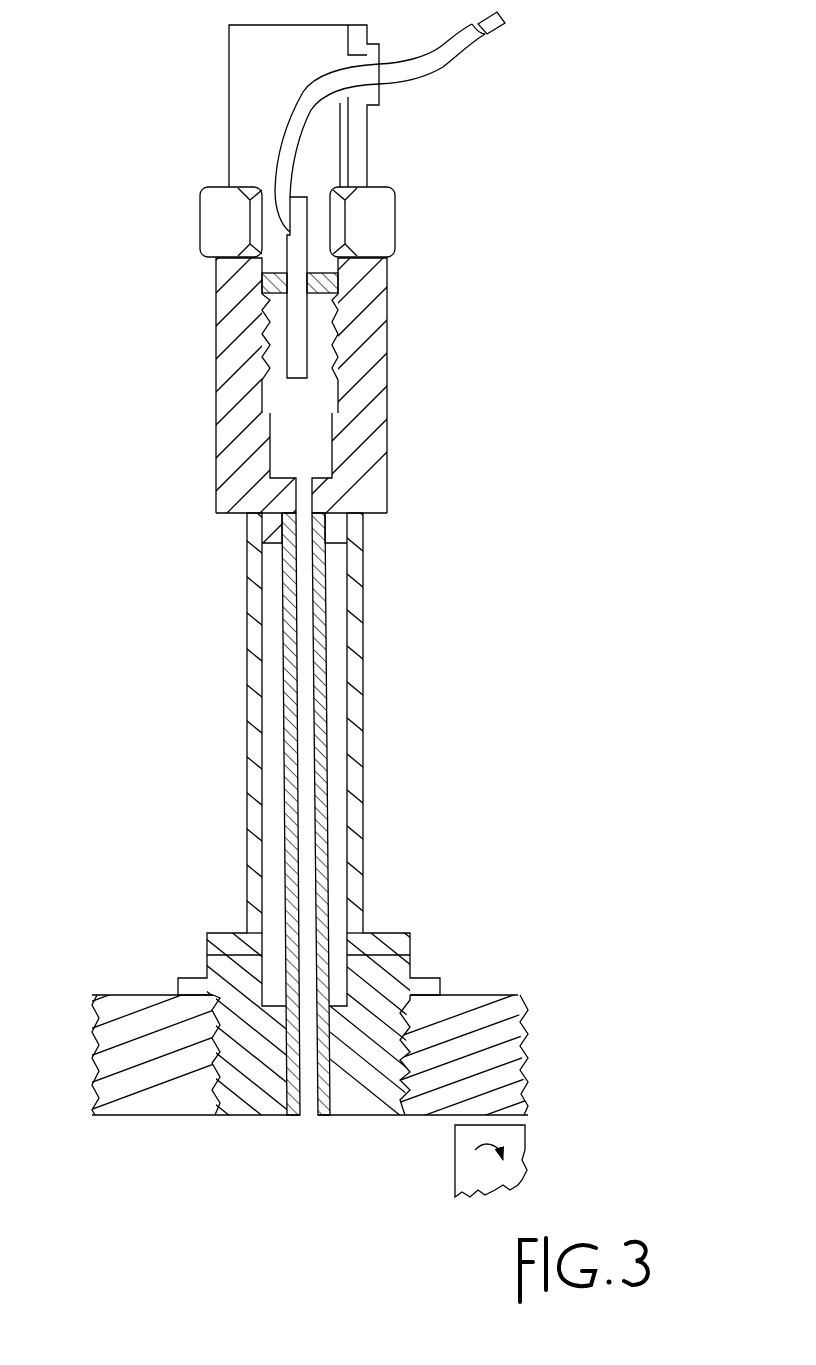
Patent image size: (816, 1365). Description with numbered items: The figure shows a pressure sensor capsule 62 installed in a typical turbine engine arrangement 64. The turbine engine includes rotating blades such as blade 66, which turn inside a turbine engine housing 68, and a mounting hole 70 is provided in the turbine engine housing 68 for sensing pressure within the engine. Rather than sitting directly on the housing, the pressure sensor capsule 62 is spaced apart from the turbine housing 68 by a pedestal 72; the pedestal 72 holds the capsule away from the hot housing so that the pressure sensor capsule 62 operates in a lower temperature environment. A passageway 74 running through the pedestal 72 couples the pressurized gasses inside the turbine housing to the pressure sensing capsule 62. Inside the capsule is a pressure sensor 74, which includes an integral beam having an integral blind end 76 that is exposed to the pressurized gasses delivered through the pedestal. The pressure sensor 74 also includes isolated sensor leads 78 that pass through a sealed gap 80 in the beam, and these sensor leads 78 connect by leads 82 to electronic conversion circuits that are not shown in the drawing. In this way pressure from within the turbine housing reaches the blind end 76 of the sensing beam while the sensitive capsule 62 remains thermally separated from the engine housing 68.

The pressure sensor capsule 62 is at (213, 155).
The turbine engine arrangement 64 is at (590, 199).
The blade 66 is at (525, 1157).
The turbine engine housing 68 is at (103, 993).
The mounting hole 70 is at (217, 1094).
The pedestal 72 is at (185, 602).
The passageway / pressure sensor 74 is at (279, 326).
The integral blind end 76 is at (300, 383).
The isolated sensor leads 78 is at (283, 127).
The sealed gap 80 is at (293, 230).
The leads 82 is at (432, 77).